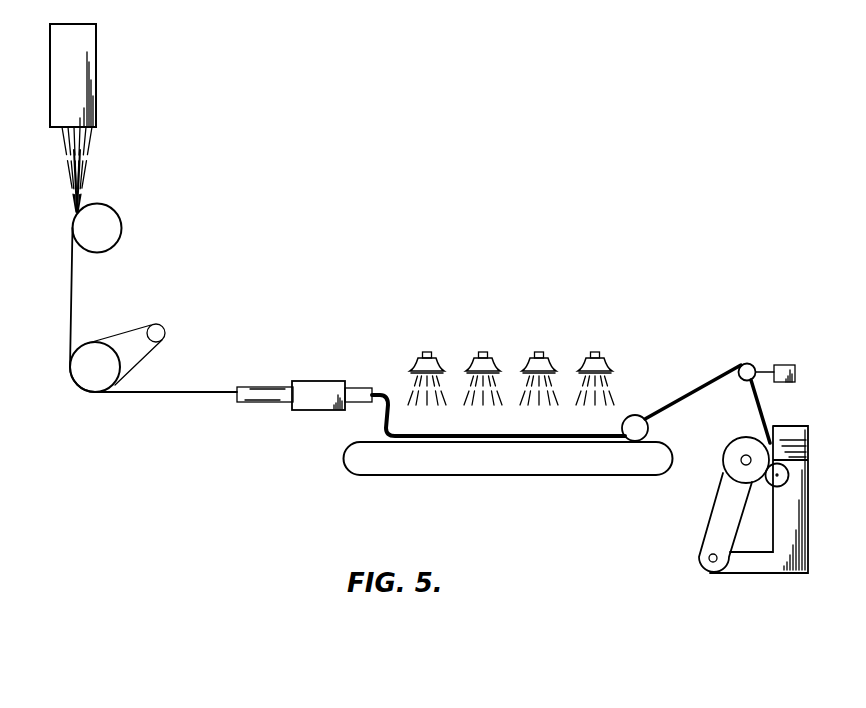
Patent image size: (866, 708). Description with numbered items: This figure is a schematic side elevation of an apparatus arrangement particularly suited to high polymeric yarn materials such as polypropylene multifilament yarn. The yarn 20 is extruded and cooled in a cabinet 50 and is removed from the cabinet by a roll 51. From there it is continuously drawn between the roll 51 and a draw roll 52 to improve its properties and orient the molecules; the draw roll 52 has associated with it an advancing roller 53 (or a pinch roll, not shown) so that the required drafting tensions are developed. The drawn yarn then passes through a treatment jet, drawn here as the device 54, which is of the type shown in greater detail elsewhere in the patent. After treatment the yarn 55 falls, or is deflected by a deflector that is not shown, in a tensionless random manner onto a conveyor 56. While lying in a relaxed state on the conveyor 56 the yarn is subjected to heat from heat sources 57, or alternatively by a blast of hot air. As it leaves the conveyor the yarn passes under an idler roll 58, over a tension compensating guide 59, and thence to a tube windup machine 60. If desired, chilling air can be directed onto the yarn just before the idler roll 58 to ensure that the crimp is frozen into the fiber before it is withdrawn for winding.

The cabinet 50 is at (95, 92).
The yarn 20 is at (82, 172).
The roll 51 is at (115, 210).
The draw roll 52 is at (88, 342).
The advancing roller 53 is at (160, 323).
The twisting and bonding device 54 is at (313, 381).
The yarn 55 is at (390, 390).
The conveyor 56 is at (527, 476).
The heat sources 57 is at (487, 350).
The idler roll 58 is at (637, 413).
The tension compensating guide 59 is at (745, 362).
The tube windup machine 60 is at (808, 497).